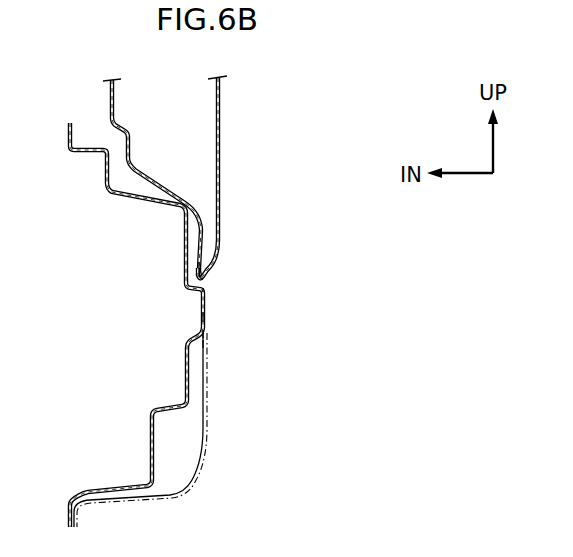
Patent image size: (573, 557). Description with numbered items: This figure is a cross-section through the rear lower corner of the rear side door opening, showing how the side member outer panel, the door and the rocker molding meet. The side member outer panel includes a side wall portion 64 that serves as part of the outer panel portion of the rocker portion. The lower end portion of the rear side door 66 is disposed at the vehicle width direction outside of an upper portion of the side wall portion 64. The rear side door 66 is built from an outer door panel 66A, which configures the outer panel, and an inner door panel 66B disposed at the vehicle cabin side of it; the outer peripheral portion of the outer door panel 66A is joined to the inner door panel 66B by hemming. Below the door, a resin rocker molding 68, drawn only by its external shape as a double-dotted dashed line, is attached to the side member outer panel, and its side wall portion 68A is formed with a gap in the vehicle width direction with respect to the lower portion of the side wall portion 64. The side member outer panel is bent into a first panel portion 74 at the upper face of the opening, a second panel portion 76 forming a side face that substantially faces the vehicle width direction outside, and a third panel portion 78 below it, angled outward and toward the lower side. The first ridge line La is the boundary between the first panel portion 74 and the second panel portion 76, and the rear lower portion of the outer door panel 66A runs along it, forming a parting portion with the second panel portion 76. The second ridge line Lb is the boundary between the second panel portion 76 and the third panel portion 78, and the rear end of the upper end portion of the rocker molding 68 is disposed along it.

The side wall portion 64 is at (170, 268).
The rear side door 66 is at (210, 177).
The outer door panel 66A is at (221, 100).
The inner door panel 66B is at (115, 100).
The rocker molding 68 is at (203, 430).
The side wall portion 68A is at (208, 383).
The first panel portion 74 is at (203, 284).
The second panel portion 76 is at (206, 317).
The third panel portion 78 is at (206, 345).
The first ridge line La is at (207, 290).
The second ridge line Lb is at (206, 335).